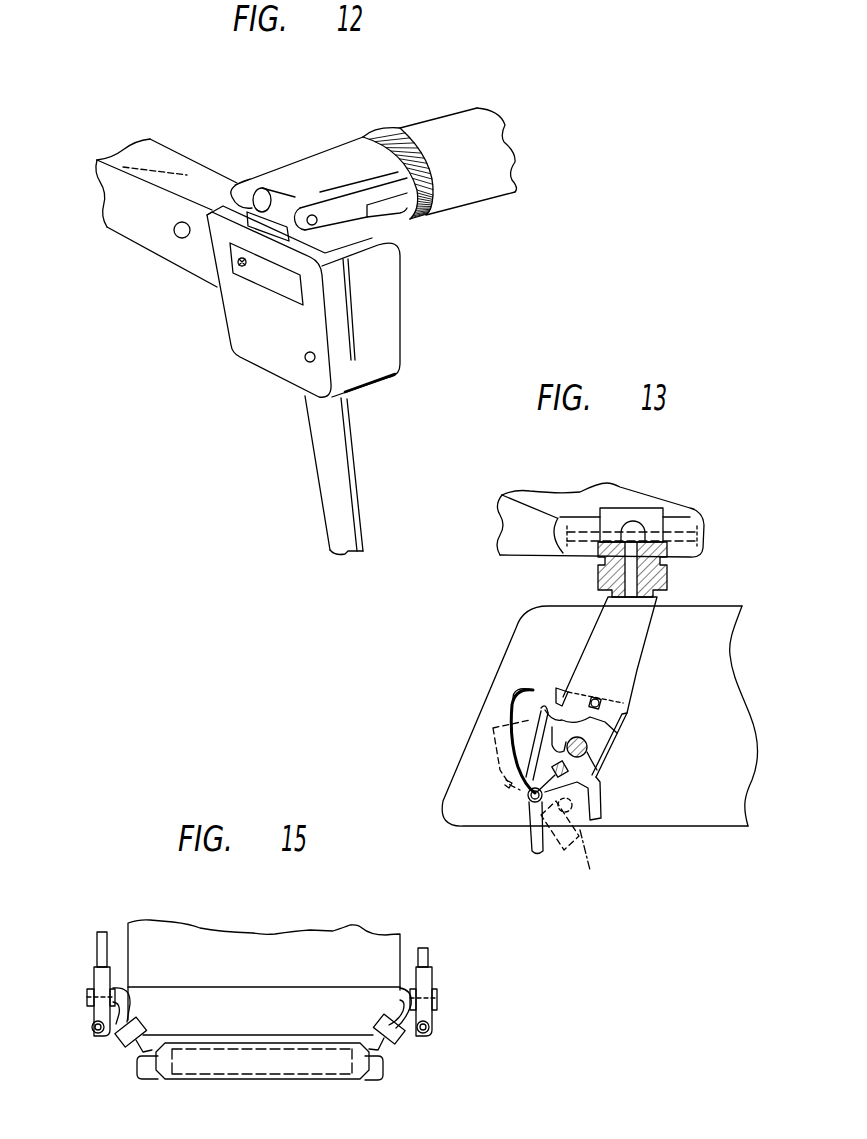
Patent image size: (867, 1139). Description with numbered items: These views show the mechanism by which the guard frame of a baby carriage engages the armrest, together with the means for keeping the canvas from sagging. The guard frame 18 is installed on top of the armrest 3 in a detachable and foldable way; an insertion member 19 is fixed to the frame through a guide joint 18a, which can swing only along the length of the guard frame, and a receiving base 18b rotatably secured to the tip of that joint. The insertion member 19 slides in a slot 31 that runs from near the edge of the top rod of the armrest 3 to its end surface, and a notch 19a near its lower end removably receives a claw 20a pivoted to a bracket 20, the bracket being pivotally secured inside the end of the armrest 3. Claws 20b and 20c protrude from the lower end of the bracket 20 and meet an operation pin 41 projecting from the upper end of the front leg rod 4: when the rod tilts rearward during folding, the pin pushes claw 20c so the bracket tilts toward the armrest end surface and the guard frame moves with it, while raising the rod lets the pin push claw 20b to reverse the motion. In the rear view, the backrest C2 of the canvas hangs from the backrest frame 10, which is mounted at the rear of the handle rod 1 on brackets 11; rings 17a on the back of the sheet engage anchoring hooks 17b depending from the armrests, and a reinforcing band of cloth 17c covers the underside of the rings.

In FIG. 12, the armrest 3 is at (173, 157).
In FIG. 13, the armrest 3 is at (718, 668).
In FIG. 12, the front leg rod 4 is at (340, 468).
In FIG. 12, the guard frame 18 is at (440, 127).
In FIG. 13, the guard frame 18 is at (570, 498).
In FIG. 12, the guide joint 18a is at (272, 200).
In FIG. 13, the guide joint 18a is at (653, 517).
In FIG. 13, the receiving base 18b is at (667, 577).
In FIG. 12, the slot 31 is at (345, 317).
In FIG. 13, the insertion member 19 is at (635, 648).
In FIG. 13, the notch 19a is at (626, 733).
In FIG. 13, the bracket 20 is at (590, 785).
In FIG. 13, the claw 20a is at (543, 707).
In FIG. 13, the claw 20b is at (527, 793).
In FIG. 13, the claw 20c is at (595, 817).
In FIG. 13, the operation pin 41 is at (588, 860).
In FIG. 15, the backrest C2 is at (262, 938).
In FIG. 15, the backrest frame 10 is at (97, 948).
In FIG. 15, the bracket 11 is at (90, 991).
In FIG. 15, the handle rod 1 is at (94, 1028).
In FIG. 15, the ring 17a is at (147, 1081).
In FIG. 15, the anchoring hook 17b is at (117, 1047).
In FIG. 15, the band of cloth 17c is at (268, 1068).